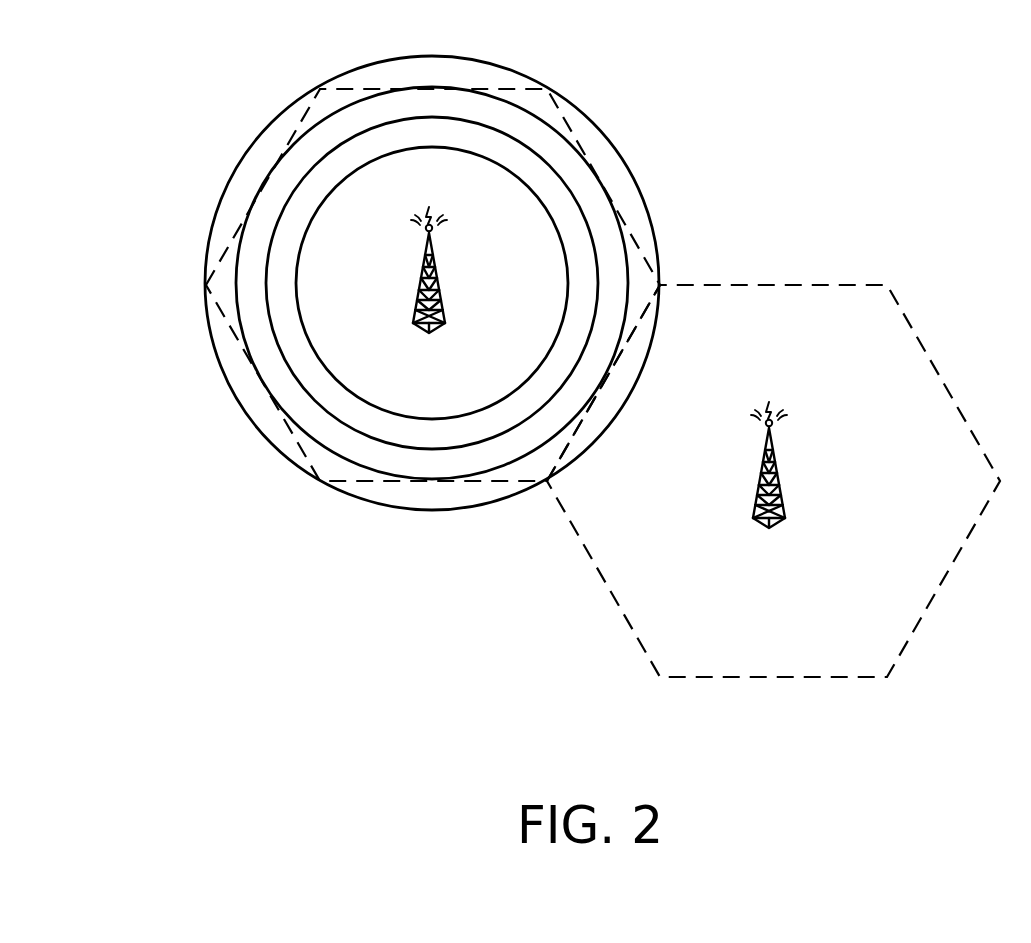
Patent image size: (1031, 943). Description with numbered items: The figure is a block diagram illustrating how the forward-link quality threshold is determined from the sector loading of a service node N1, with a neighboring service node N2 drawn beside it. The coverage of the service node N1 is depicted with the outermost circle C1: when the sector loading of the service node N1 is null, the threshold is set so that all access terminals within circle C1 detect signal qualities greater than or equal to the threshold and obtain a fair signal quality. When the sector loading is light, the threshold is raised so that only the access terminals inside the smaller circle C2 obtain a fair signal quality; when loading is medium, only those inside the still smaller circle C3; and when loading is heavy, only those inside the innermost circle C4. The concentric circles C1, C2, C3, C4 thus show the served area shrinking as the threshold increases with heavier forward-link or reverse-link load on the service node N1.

The circle C1 is at (287, 108).
The circle C2 is at (292, 147).
The circle C3 is at (290, 193).
The circle C4 is at (303, 250).
The service node N1 is at (440, 272).
The service node N2 is at (780, 467).